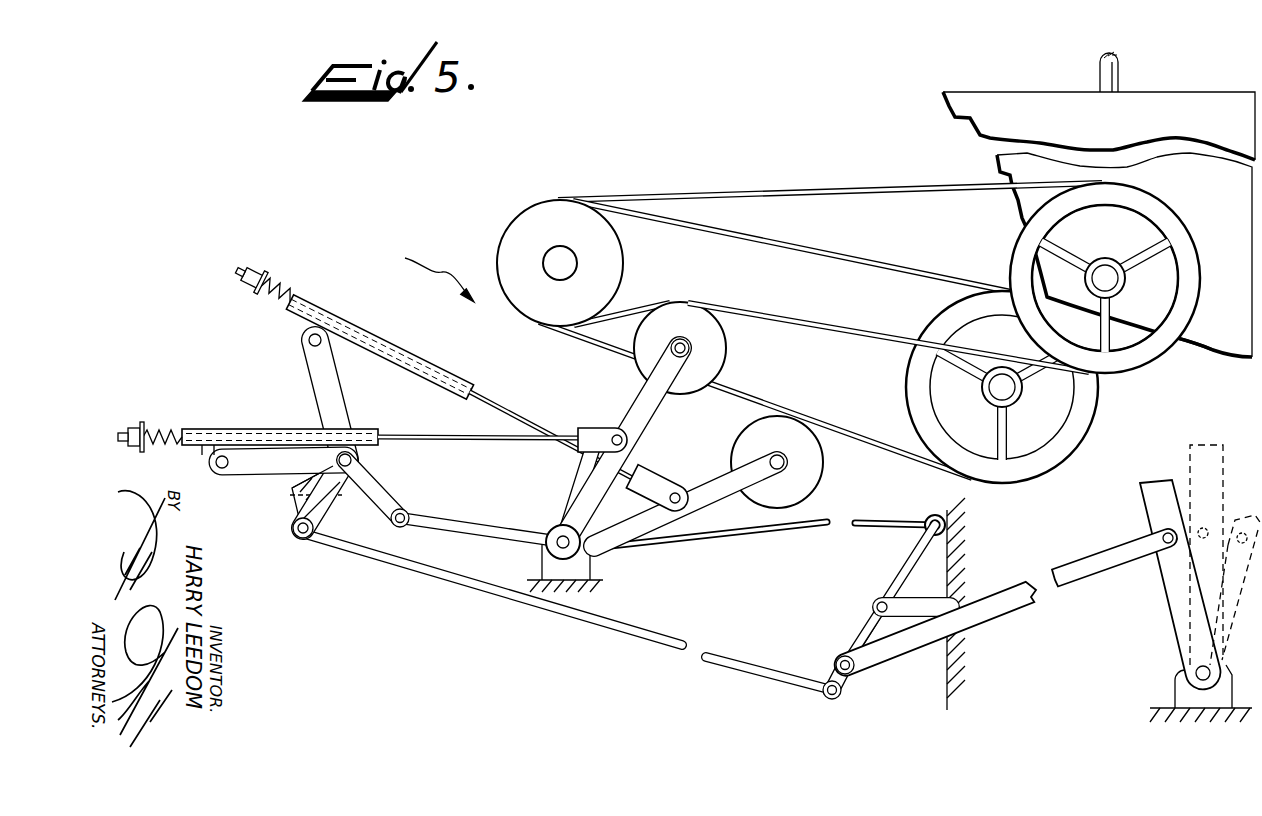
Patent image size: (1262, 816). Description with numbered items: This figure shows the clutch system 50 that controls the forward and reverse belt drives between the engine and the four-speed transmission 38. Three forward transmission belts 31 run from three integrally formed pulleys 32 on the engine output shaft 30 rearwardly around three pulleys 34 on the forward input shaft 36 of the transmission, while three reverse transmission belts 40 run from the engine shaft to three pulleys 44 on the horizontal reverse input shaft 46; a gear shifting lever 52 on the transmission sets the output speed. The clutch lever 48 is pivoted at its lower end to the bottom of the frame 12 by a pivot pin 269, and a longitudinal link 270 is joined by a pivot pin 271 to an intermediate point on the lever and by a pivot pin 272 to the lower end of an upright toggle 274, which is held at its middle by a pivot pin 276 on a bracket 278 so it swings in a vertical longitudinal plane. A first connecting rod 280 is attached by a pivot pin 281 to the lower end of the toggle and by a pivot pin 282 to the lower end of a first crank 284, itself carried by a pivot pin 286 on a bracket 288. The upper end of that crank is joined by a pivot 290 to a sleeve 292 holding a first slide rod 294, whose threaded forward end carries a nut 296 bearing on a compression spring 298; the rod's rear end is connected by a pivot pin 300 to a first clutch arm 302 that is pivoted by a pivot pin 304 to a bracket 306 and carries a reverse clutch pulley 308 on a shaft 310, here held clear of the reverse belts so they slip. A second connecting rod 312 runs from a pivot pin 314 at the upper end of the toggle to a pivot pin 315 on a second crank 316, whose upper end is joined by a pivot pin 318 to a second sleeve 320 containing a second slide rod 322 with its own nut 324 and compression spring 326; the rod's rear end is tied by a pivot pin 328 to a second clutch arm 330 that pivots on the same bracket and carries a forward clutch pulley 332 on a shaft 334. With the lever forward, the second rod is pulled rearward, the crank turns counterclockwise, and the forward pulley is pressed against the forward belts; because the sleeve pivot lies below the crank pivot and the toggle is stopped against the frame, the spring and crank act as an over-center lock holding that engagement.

The frame 12 is at (298, 505).
The engine output shaft 30 is at (545, 262).
The forward transmission belts 31 is at (808, 193).
The pulleys 32 is at (506, 220).
The pulleys 34 is at (1165, 212).
The input shaft 36 is at (1105, 266).
The four-speed transmission 38 is at (1040, 122).
The reverse transmission belts 40 is at (832, 260).
The pulleys 44 is at (1092, 397).
The reverse input shaft 46 is at (990, 395).
The clutch lever 48 is at (1140, 508).
The clutch system 50 is at (426, 268).
The gear shifting lever 52 is at (1122, 70).
The pivot pin 269 is at (1196, 676).
The longitudinal link 270 is at (990, 615).
The pivot pin 271 is at (1156, 540).
The pivot pin 272 is at (850, 694).
The toggle 274 is at (858, 632).
The pivot pin 276 is at (878, 608).
The bracket 278 is at (900, 600).
The first connecting rod 280 is at (616, 644).
The pivot pin 281 is at (838, 672).
The pivot pin 282 is at (303, 541).
The first crank 284 is at (318, 382).
The pivot pin 286 is at (358, 461).
The bracket 288 is at (296, 490).
The pivot 290 is at (308, 344).
The sleeve 292 is at (335, 317).
The first slide rod 294 is at (488, 393).
The nut 296 is at (256, 270).
The compression spring 298 is at (280, 286).
The pivot pin 300 is at (674, 512).
The first clutch arm 302 is at (702, 480).
The pivot pin 304 is at (546, 520).
The bracket 306 is at (545, 545).
The reverse clutch pulley 308 is at (792, 463).
The shaft 310 is at (820, 474).
The second connecting rod 312 is at (735, 527).
The pivot pin 314 is at (932, 514).
The pivot pin 315 is at (408, 512).
The second crank 316 is at (242, 476).
The pivot pin 318 is at (213, 463).
The second sleeve 320 is at (206, 430).
The second slide rod 322 is at (408, 436).
The nut 324 is at (134, 428).
The compression spring 326 is at (160, 430).
The pivot pin 328 is at (612, 432).
The second clutch arm 330 is at (672, 420).
The forward clutch pulley 332 is at (727, 347).
The shaft 334 is at (672, 352).